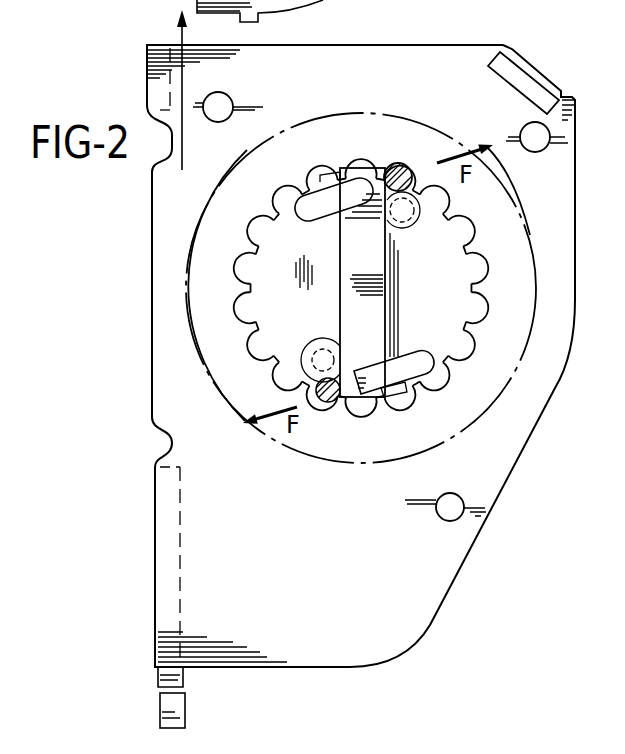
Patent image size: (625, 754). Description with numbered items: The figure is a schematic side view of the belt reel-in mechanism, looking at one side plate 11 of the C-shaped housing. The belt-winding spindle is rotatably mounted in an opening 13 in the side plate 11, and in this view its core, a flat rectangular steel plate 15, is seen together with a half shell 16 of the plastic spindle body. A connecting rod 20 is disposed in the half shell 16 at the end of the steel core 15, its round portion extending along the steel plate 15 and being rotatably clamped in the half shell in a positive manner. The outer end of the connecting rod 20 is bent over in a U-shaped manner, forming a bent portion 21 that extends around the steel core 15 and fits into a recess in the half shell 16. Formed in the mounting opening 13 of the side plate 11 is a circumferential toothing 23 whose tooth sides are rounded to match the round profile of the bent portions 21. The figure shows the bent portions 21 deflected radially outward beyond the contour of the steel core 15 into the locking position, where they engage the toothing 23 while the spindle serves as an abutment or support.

The side plate 11 is at (470, 53).
The opening 13 is at (470, 343).
The steel plate 15 is at (363, 260).
The half shell 16 is at (446, 293).
The connecting rod 20 is at (345, 162).
The bent portion 21 is at (403, 163).
The circumferential toothing 23 is at (427, 190).